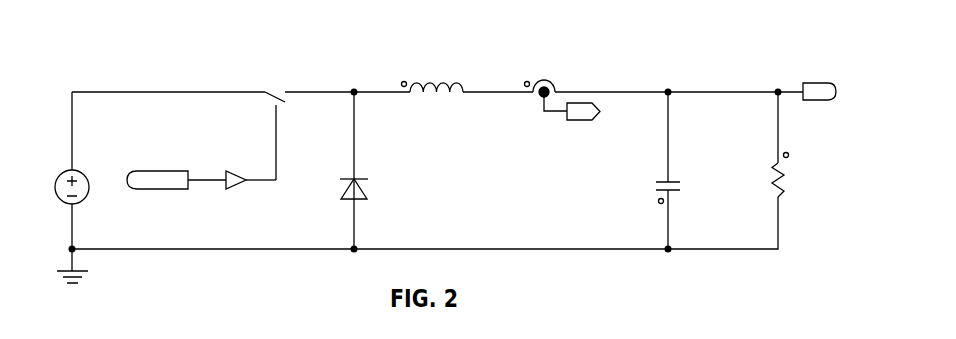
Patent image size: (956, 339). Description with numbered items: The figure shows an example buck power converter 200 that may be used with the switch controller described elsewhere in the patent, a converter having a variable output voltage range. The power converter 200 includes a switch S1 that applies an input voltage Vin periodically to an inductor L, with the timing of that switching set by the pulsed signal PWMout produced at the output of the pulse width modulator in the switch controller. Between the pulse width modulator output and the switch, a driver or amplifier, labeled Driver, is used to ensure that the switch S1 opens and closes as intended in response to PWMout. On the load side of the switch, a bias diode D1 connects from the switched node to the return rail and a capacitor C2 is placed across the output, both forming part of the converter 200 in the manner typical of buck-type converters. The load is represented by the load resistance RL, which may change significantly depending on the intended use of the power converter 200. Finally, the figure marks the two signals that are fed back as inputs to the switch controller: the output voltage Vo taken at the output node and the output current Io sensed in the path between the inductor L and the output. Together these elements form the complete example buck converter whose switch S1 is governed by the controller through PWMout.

The buck power converter 200 is at (133, 48).
The input voltage Vin is at (84, 170).
The power converter switch S1 is at (272, 120).
The driver Driver is at (236, 163).
The pulsed signal PWMout is at (170, 196).
The bias diode D1 is at (370, 170).
The inductor L is at (433, 73).
The output current Io is at (563, 115).
The capacitor C2 is at (686, 170).
The load resistance RL is at (797, 147).
The output voltage Vo is at (819, 78).